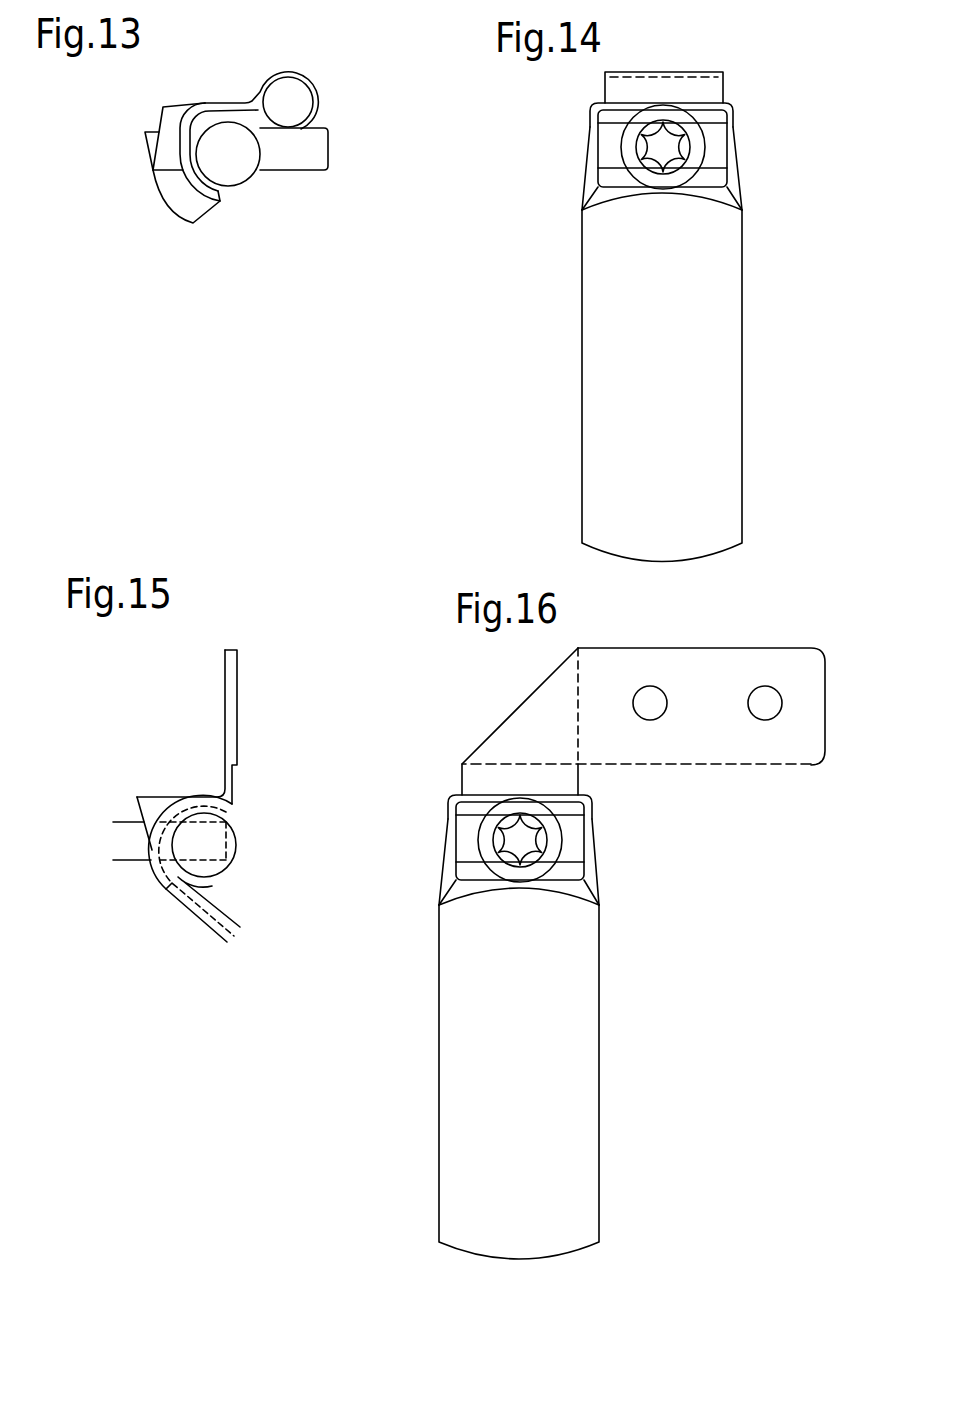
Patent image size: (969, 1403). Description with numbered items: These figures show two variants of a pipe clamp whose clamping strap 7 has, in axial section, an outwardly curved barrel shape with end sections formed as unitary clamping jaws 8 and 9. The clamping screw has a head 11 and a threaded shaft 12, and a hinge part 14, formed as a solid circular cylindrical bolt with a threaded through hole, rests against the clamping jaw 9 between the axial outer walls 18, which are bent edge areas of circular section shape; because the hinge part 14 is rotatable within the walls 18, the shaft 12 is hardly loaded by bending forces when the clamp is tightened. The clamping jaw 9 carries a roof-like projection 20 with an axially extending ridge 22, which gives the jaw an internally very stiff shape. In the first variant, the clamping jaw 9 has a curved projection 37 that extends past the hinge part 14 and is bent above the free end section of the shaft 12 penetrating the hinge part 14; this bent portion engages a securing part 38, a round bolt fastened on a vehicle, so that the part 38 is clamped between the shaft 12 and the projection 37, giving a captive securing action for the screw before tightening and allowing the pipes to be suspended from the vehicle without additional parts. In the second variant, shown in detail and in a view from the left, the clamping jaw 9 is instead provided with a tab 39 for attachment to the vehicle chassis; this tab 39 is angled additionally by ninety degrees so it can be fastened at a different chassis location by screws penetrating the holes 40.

In FIG. 15, the clamping strap 7 is at (203, 927).
In FIG. 16, the clamping strap 7 is at (602, 1125).
In FIG. 16, the clamping jaw 8 is at (450, 830).
In FIG. 13, the clamping jaw 9 is at (207, 105).
In FIG. 15, the clamping jaw 9 is at (158, 792).
In FIG. 16, the head 11 is at (533, 841).
In FIG. 13, the shaft 12 is at (313, 173).
In FIG. 15, the shaft 12 is at (122, 845).
In FIG. 13, the hinge part 14 is at (238, 182).
In FIG. 15, the hinge part 14 is at (227, 867).
In FIG. 13, the axial outer walls 18 is at (193, 173).
In FIG. 15, the axial outer walls 18 is at (172, 870).
In FIG. 13, the projection 20 is at (180, 113).
In FIG. 13, the ridge 22 is at (165, 108).
In FIG. 15, the ridge 22 is at (138, 797).
In FIG. 13, the projection 37 is at (302, 73).
In FIG. 14, the projection 37 is at (690, 72).
In FIG. 13, the securing part 38 is at (300, 120).
In FIG. 15, the tab 39 is at (240, 678).
In FIG. 16, the tab 39 is at (690, 648).
In FIG. 16, the holes 40 is at (653, 720).